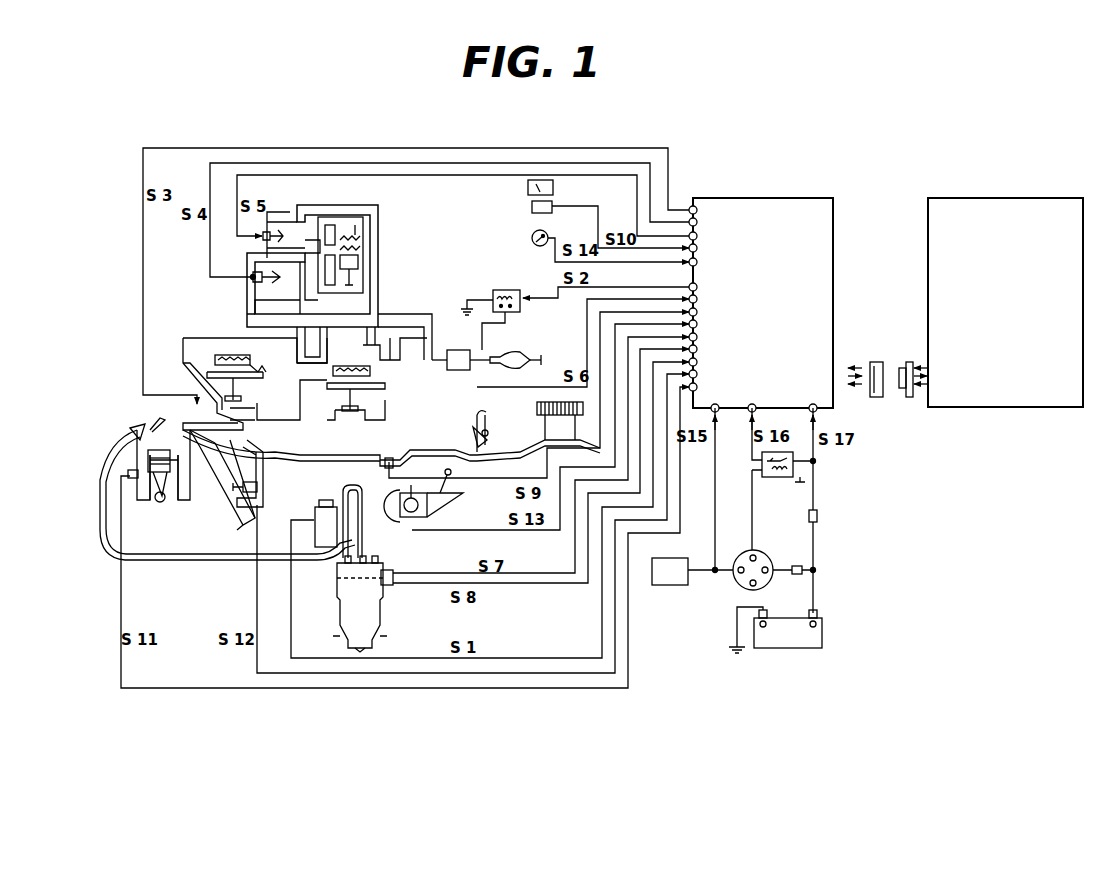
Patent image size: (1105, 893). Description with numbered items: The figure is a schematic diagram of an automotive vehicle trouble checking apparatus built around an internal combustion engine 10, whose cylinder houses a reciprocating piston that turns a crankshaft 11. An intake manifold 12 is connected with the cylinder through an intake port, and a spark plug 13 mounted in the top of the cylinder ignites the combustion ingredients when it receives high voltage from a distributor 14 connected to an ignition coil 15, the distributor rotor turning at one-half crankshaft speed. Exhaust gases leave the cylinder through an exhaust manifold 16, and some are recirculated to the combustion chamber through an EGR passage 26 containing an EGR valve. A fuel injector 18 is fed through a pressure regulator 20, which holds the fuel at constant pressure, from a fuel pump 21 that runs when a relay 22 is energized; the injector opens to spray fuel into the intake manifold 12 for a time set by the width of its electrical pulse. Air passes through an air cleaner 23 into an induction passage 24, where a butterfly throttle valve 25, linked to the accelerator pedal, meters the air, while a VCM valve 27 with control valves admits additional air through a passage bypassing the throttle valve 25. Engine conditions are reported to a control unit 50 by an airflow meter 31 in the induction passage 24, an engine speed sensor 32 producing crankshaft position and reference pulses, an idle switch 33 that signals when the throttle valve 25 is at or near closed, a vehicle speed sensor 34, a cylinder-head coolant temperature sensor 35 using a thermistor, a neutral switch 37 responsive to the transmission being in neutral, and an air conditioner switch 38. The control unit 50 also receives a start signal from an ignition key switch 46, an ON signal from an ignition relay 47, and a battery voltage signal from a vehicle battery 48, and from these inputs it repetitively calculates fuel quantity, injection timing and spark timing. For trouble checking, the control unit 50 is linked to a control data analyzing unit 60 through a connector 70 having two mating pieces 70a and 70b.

The internal combustion engine 10 is at (127, 417).
The crankshaft 11 is at (163, 502).
The intake manifold 12 is at (238, 434).
The spark plug 13 is at (110, 440).
The distributor 14 is at (383, 615).
The ignition coil 15 is at (315, 509).
The exhaust manifold 16 is at (220, 514).
The fuel injector 18 is at (196, 404).
The pressure regulator 20 is at (458, 350).
The fuel pump 21 is at (524, 356).
The relay 22 is at (507, 290).
The air cleaner 23 is at (537, 408).
The induction passage 24 is at (428, 442).
The butterfly throttle valve 25 is at (386, 440).
The EGR passage 26 is at (272, 474).
The VCM valve 27 is at (378, 246).
The airflow meter 31 is at (495, 448).
The engine speed sensor 32 is at (393, 572).
The idle switch 33 is at (375, 473).
The vehicle speed sensor 34 is at (532, 207).
The cylinder-head coolant temperature sensor 35 is at (134, 480).
The neutral switch 37 is at (393, 525).
The air conditioner switch 38 is at (532, 241).
The ignition key switch 46 is at (740, 587).
The ignition relay 47 is at (778, 480).
The vehicle battery 48 is at (822, 624).
The control unit 50 is at (808, 196).
The control data analyzing unit 60 is at (1010, 196).
The connector 70 is at (904, 364).
The mating piece 70a is at (876, 398).
The mating piece 70b is at (908, 398).